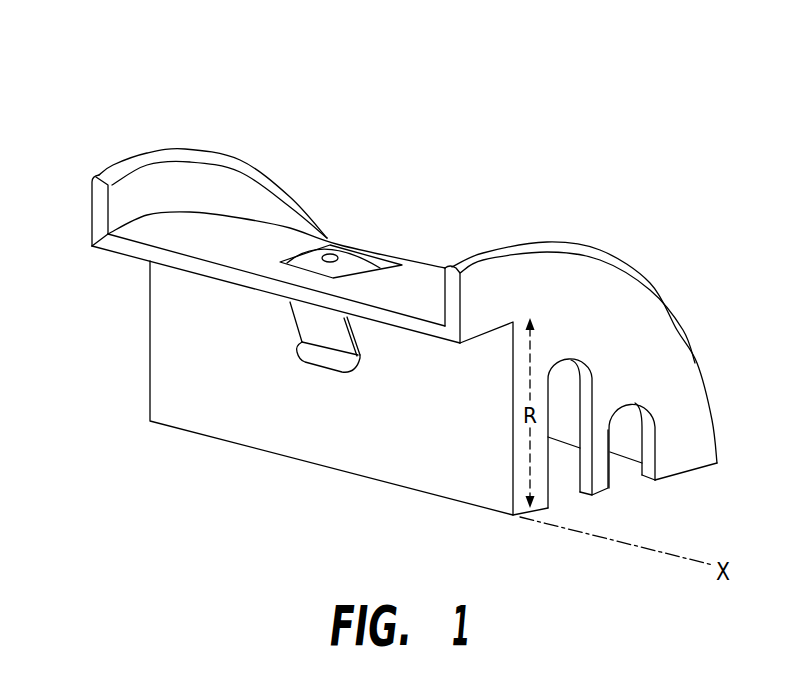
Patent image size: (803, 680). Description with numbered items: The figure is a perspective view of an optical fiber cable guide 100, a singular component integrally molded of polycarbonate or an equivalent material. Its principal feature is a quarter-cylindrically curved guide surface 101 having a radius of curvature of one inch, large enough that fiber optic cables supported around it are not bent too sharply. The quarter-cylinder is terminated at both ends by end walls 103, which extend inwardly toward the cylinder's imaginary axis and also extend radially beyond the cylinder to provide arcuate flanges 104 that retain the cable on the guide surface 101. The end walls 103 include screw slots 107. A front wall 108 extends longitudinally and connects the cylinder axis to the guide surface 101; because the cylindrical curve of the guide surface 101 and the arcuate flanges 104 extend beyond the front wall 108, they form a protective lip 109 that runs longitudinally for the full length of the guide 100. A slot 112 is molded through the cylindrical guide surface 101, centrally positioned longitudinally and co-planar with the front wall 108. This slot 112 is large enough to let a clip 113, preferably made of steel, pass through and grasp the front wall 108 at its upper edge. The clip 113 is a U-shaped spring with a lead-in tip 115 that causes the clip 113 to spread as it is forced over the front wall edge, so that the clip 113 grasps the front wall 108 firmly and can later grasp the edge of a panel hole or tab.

The optical fiber cable guide 100 is at (117, 87).
The guide surface 101 is at (413, 300).
The end walls 103 is at (613, 313).
The arcuate flanges 104 is at (193, 181).
The screw slots 107 is at (600, 386).
The front wall 108 is at (440, 437).
The protective lip 109 is at (212, 286).
The slot 112 is at (360, 250).
The clip 113 is at (302, 228).
The lead-in tip 115 is at (303, 371).